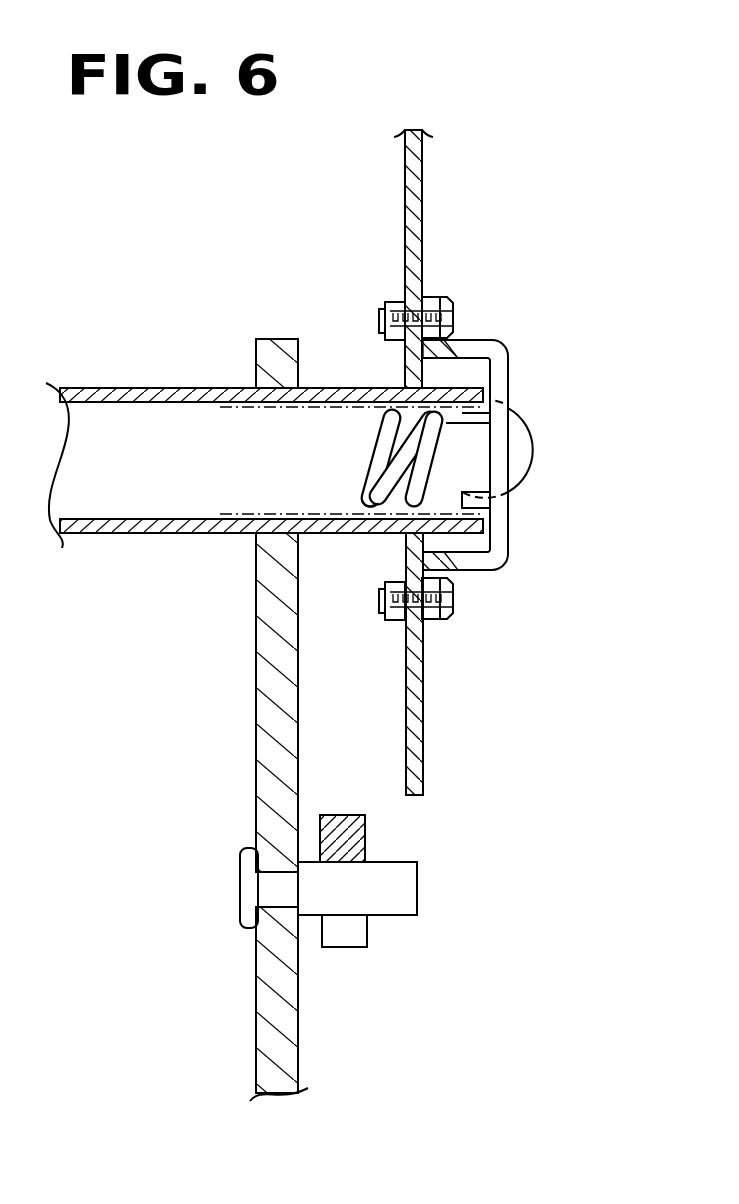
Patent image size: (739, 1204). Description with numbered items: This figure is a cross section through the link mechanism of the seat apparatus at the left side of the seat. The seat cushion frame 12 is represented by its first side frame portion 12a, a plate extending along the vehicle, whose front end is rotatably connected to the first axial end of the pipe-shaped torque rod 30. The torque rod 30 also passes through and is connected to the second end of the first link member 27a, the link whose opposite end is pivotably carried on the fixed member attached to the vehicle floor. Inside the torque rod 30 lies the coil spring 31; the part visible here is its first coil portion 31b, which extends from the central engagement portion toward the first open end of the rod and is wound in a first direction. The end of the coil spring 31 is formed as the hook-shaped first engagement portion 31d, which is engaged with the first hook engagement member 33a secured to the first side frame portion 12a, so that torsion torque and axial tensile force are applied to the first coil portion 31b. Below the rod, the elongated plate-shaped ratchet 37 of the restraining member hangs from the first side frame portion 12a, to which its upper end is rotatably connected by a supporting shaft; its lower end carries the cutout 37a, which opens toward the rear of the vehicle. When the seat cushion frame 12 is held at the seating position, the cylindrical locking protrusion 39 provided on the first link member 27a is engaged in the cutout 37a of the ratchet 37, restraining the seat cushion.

The seat cushion frame 12 is at (428, 251).
The first side frame portion 12a is at (426, 648).
The torque rod 30 is at (152, 387).
The coil spring 31 is at (368, 430).
The first coil portion 31b is at (366, 503).
The first engagement portion 31d is at (528, 440).
The first hook engagement member 33a is at (506, 544).
The first link member 27a is at (264, 665).
The ratchet 37 is at (370, 831).
The cutout 37a is at (354, 935).
The locking protrusion 39 is at (416, 888).